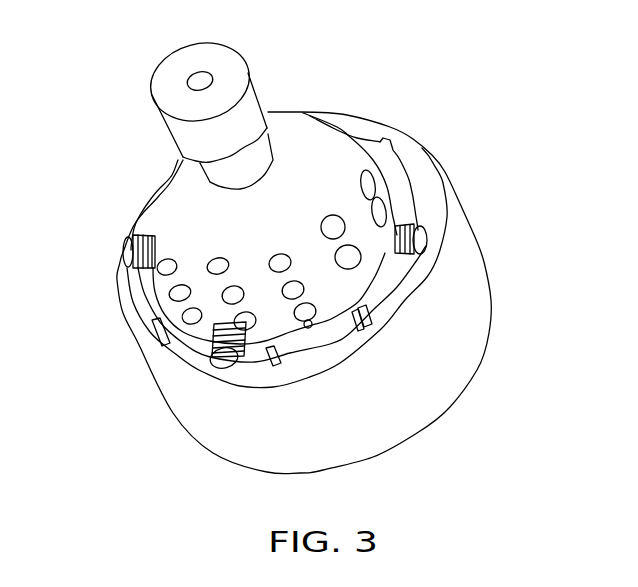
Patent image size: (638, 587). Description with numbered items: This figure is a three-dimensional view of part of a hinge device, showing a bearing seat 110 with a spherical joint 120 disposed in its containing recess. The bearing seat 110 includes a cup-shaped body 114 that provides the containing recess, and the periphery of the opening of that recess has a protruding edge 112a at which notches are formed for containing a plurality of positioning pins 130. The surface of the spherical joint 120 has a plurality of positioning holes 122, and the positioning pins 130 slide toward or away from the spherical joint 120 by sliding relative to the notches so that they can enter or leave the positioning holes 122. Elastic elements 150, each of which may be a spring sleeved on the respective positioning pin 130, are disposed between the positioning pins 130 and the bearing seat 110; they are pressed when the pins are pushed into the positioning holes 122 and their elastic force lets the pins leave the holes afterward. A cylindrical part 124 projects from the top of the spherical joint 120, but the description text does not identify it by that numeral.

The bearing seat 110 is at (461, 270).
The cup-shaped body 114 is at (461, 270).
The spherical joint 120 is at (323, 143).
The cylindrical boss 124 is at (253, 98).
The positioning holes 122 is at (183, 288).
The positioning pins 130 is at (463, 205).
The elastic elements 150 is at (400, 228).
The protruding edge 112a is at (373, 281).